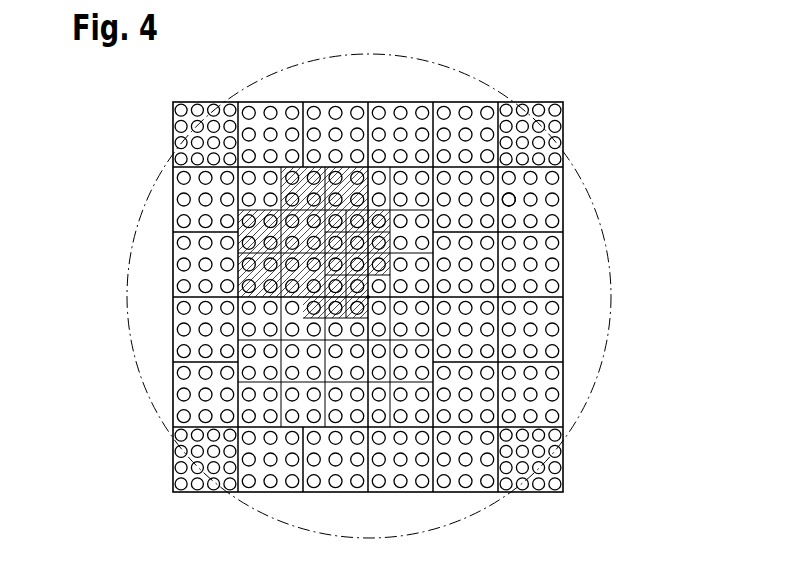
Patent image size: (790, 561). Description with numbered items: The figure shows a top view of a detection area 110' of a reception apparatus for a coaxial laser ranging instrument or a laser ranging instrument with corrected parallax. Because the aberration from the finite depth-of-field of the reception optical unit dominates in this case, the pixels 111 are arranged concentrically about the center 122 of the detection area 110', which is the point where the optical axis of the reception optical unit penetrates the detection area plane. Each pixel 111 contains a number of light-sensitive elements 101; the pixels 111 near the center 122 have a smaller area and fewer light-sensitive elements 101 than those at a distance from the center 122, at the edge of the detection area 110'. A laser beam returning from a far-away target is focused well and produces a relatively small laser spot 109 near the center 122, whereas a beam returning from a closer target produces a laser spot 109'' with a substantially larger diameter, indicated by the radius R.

The light-sensitive elements 101 is at (562, 275).
The laser spot 109 is at (310, 282).
The laser spot 109'' is at (403, 296).
The detection area 110' is at (619, 399).
The pixels 111 is at (504, 203).
The center 122 is at (362, 302).
The radius R is at (368, 297).